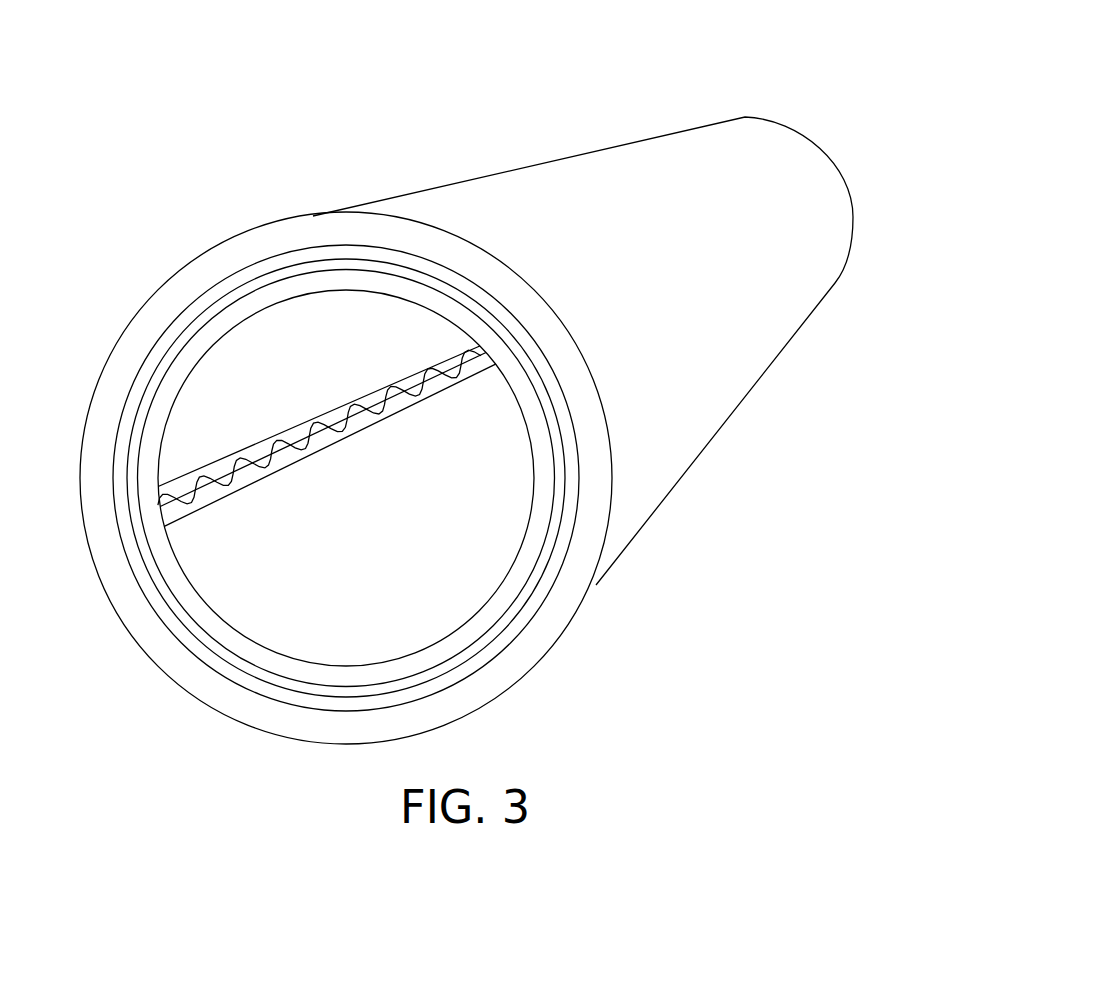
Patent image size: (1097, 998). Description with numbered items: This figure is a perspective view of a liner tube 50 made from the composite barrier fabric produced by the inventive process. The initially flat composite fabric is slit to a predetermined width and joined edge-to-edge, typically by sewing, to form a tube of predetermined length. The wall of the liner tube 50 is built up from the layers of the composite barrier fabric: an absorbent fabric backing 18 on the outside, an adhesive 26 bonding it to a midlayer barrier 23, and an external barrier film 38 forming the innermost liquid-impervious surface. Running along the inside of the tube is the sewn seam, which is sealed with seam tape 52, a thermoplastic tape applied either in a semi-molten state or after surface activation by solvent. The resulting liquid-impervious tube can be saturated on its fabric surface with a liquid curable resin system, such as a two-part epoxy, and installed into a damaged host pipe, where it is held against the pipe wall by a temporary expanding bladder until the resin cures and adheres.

The liner tube 50 is at (466, 398).
The fabric backing 18 is at (582, 562).
The adhesive 26 is at (527, 612).
The midlayer barrier 23 is at (477, 647).
The external barrier film 38 is at (430, 657).
The seam tape 52 is at (263, 473).